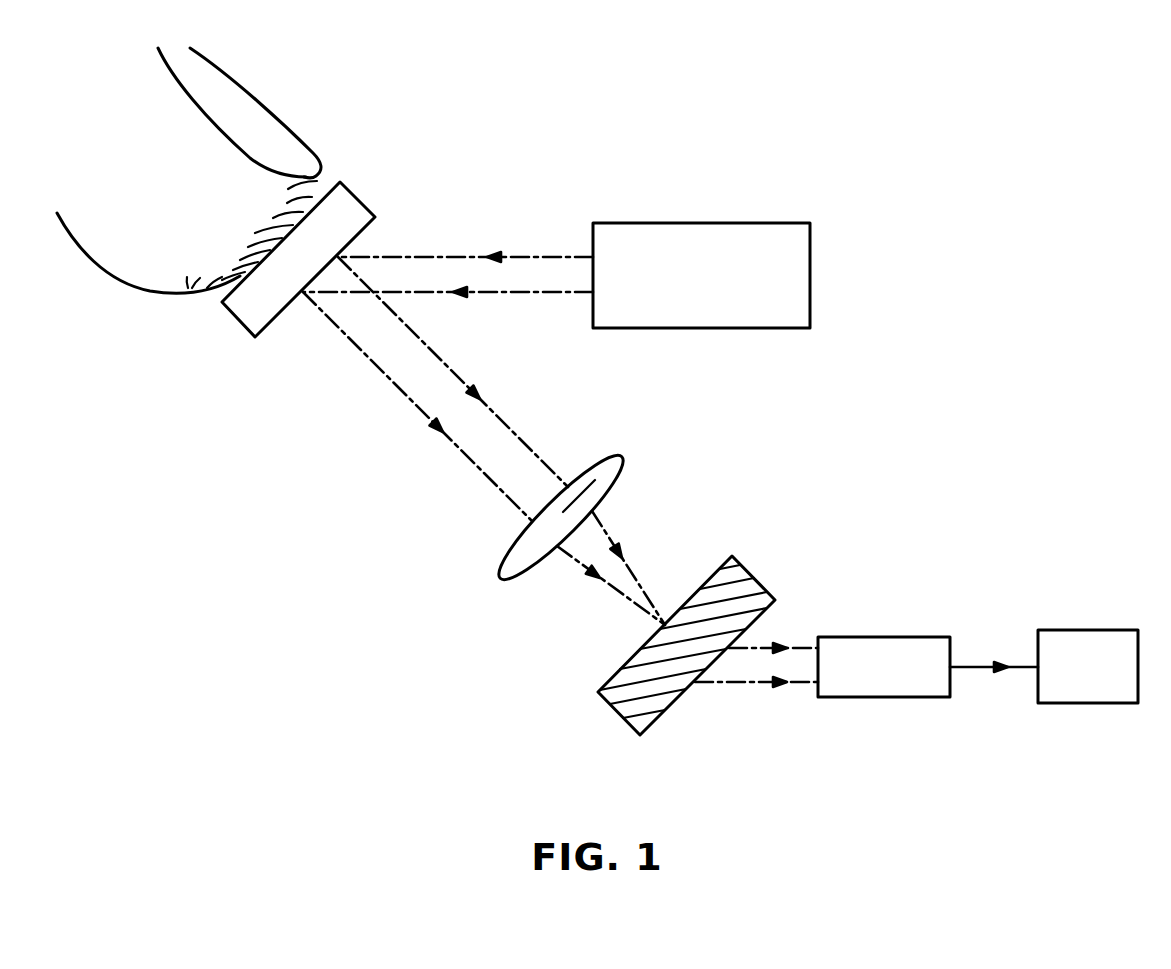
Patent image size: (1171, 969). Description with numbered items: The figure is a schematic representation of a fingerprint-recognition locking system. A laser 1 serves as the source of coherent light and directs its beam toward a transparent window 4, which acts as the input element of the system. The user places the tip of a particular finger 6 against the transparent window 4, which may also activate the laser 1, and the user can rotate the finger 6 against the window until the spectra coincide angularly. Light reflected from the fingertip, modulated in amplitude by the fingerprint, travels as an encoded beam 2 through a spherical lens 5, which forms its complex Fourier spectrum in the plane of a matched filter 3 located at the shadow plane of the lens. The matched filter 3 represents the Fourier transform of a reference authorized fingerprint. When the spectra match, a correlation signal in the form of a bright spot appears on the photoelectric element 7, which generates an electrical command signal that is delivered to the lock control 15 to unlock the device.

The laser 1 is at (705, 323).
The encoded beam 2 is at (498, 440).
The matched filter 3 is at (623, 713).
The transparent window 4 is at (272, 322).
The spherical lens 5 is at (512, 547).
The finger 6 is at (184, 207).
The photoelectric element 7 is at (893, 682).
The lock control 15 is at (1083, 687).